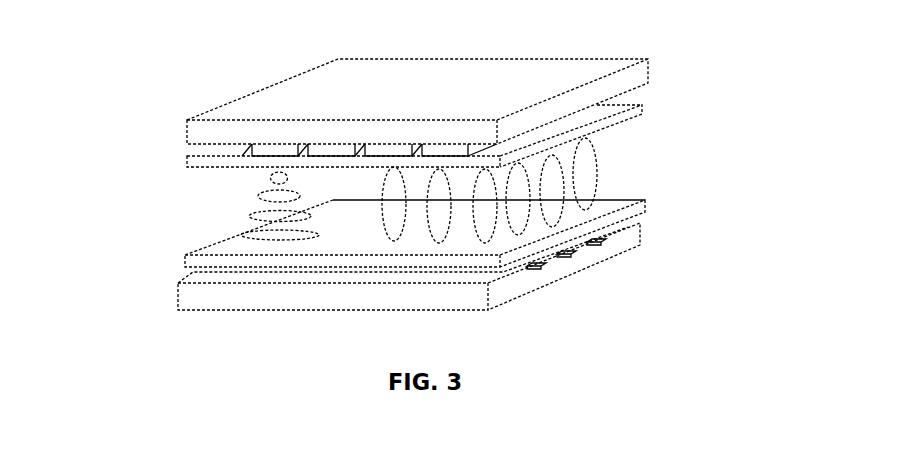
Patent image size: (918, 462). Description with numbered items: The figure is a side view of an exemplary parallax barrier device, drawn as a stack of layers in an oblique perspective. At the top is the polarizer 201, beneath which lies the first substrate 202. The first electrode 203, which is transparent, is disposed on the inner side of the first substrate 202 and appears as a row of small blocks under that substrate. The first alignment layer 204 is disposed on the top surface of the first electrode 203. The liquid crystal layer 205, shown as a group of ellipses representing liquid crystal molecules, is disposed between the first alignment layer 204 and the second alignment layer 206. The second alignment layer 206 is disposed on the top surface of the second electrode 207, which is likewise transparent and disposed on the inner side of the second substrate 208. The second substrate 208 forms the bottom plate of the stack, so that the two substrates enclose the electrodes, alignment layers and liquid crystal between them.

The polarizer 201 is at (648, 59).
The first substrate 202 is at (186, 133).
The first electrode 203 is at (197, 150).
The first alignment layer 204 is at (642, 110).
The liquid crystal layer 205 is at (598, 160).
The second alignment layer 206 is at (648, 208).
The second electrode 207 is at (193, 270).
The second substrate 208 is at (640, 243).